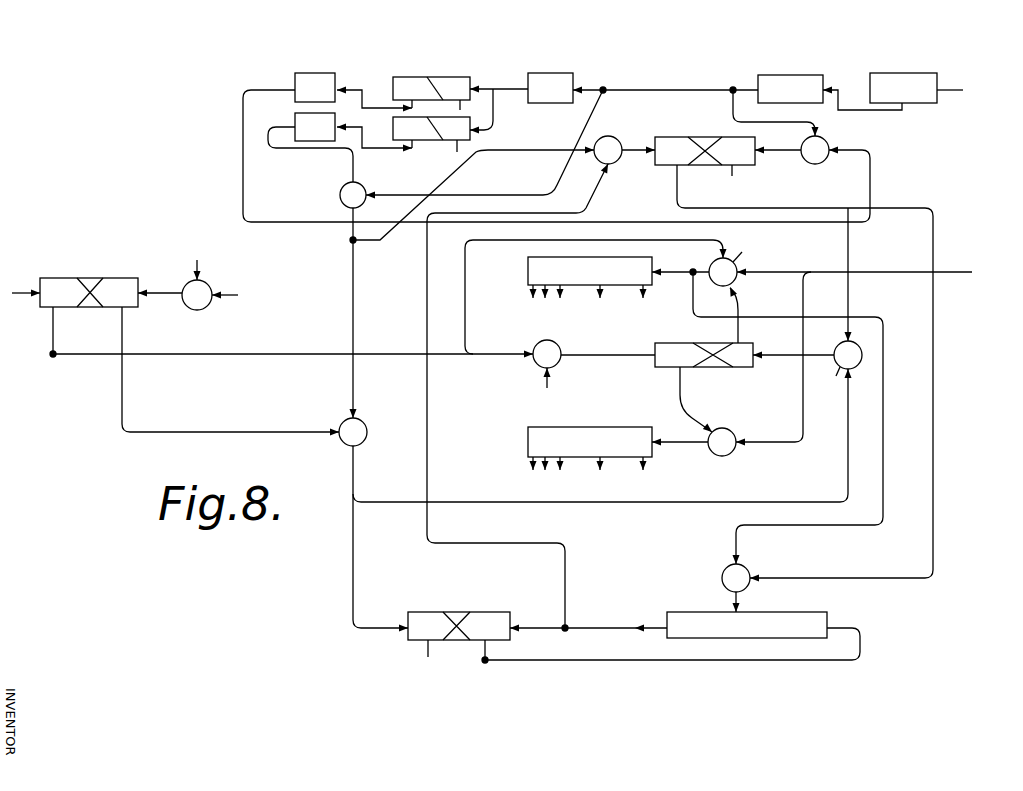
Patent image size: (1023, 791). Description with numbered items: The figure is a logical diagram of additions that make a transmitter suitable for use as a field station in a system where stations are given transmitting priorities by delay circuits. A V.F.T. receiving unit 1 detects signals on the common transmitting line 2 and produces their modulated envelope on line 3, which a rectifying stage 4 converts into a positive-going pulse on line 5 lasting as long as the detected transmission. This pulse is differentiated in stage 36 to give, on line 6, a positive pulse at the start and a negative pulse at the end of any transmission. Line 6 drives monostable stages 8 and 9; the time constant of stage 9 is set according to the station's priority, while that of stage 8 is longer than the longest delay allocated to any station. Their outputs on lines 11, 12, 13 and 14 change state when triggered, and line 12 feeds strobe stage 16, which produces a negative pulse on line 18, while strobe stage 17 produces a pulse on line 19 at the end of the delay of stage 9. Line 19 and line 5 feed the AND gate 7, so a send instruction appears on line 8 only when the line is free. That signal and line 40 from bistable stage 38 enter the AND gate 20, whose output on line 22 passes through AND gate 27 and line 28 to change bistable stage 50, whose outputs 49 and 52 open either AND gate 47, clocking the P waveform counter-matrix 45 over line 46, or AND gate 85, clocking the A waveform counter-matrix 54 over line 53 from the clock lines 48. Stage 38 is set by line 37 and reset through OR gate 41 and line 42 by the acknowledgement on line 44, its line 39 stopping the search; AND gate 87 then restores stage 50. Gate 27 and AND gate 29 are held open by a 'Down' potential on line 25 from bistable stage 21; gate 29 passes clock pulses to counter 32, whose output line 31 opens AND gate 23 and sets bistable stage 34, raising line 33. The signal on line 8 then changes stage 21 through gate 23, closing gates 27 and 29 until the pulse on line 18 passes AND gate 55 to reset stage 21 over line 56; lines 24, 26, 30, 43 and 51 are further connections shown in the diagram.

The V.F.T. receiving unit 1 is at (869, 86).
The common transmitting line 2 is at (945, 93).
The envelope output line 3 is at (883, 112).
The rectifying stage 4 is at (757, 84).
The rectified pulse line 5 is at (660, 90).
The differentiated signal line 6 is at (511, 93).
The AND gate 7 is at (341, 189).
The monostable stage 8 is at (355, 270).
The monostable stage 9 is at (403, 136).
The output line of stage 8 11 is at (471, 108).
The output line of stage 8 12 is at (431, 97).
The output line of stage 9 13 is at (431, 141).
The output line of stage 9 14 is at (414, 159).
The strobe stage 16 is at (336, 84).
The strobe stage 17 is at (294, 116).
The strobe output line 18 is at (282, 88).
The strobe output line 19 is at (309, 154).
The AND gate 20 is at (341, 424).
The bistable stage 21 is at (707, 136).
The output line of gate 20 22 is at (352, 468).
The AND gate 23 is at (608, 139).
The line 24 is at (638, 162).
The output line of stage 21 25 is at (805, 382).
The output line 26 is at (734, 180).
The AND gate 27 is at (828, 381).
The output line of gate 27 28 is at (807, 353).
The AND gate 29 is at (721, 577).
The line 30 is at (722, 601).
The output line of counter 32 31 is at (547, 396).
The counter 32 is at (807, 614).
The output line of stage 34 33 is at (751, 660).
The bistable stage 34 is at (437, 614).
The differentiating stage 36 is at (543, 104).
The output line of OR gate 37 is at (20, 292).
The bistable stage 38 is at (91, 278).
The output line of stage 38 39 is at (291, 332).
The output line of stage 38 40 is at (230, 371).
The OR gate 41 is at (192, 314).
The output line of OR gate 41 42 is at (160, 292).
The input line 43 is at (193, 261).
The acknowledgement input line 44 is at (236, 300).
The P waveform counter-matrix 45 is at (602, 427).
The clock line to P counter-matrix 46 is at (675, 442).
The AND gate 47 is at (733, 433).
The clock signal lines 48 is at (957, 274).
The output line of stage 50 49 is at (701, 401).
The bistable stage 50 is at (703, 342).
The line 51 is at (617, 357).
The output line of stage 50 52 is at (745, 314).
The clock line to A counter-matrix 53 is at (773, 537).
The A waveform counter-matrix 54 is at (527, 266).
The AND gate 55 is at (813, 165).
The reset line 56 is at (778, 161).
The AND gate 85 is at (747, 248).
The AND gate 87 is at (559, 351).